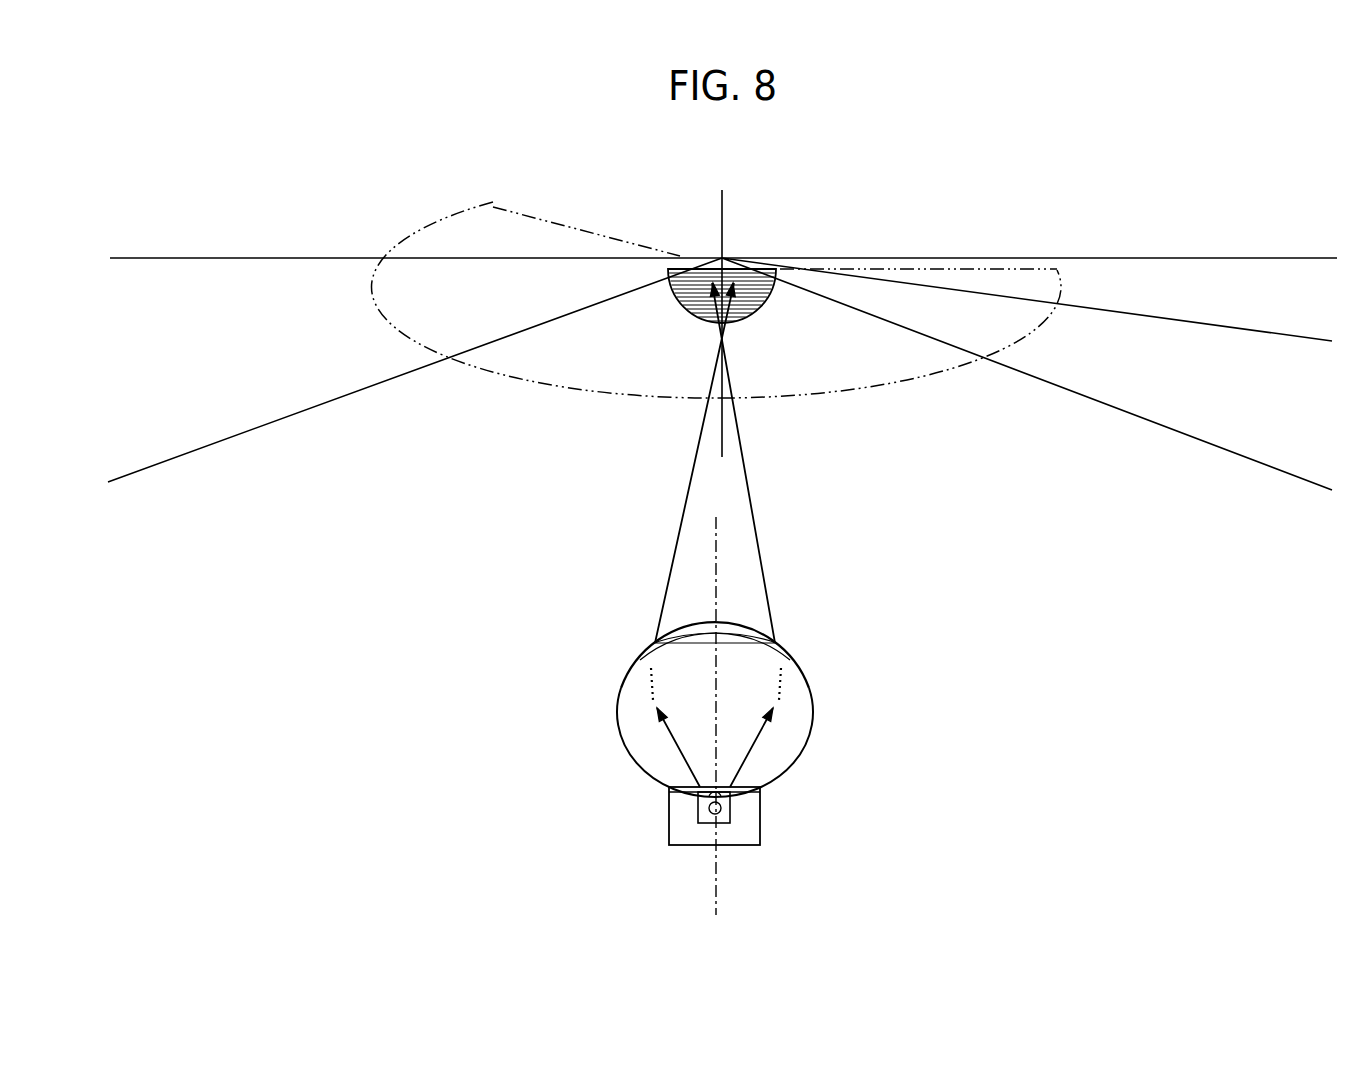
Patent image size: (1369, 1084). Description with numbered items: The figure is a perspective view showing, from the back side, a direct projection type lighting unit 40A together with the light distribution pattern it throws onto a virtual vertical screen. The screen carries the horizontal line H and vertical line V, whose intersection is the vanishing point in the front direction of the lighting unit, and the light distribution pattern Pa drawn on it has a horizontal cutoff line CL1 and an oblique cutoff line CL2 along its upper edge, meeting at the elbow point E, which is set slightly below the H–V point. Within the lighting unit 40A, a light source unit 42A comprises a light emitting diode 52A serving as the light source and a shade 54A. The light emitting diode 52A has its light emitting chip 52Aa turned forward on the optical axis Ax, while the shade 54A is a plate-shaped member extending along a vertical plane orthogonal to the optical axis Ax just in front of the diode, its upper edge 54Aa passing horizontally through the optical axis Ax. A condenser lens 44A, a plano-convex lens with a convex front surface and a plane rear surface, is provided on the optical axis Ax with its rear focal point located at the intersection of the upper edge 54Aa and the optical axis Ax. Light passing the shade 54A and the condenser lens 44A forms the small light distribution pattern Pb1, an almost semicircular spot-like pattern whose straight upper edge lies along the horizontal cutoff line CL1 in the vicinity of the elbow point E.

The lighting unit 40A is at (1034, 749).
The light source unit 42A is at (586, 786).
The condenser lens 44A is at (600, 673).
The light emitting diode 52A is at (752, 816).
The light emitting chip 52Aa is at (703, 830).
The shade 54A is at (656, 826).
The upper edge 54Aa is at (745, 785).
The horizontal line H is at (719, 259).
The vertical line V is at (721, 328).
The optical axis Ax is at (716, 562).
The elbow point E is at (735, 250).
The horizontal cutoff line CL1 is at (893, 266).
The oblique cutoff line CL2 is at (584, 228).
The light distribution pattern Pa is at (430, 212).
The small light distribution pattern Pb1 is at (764, 336).